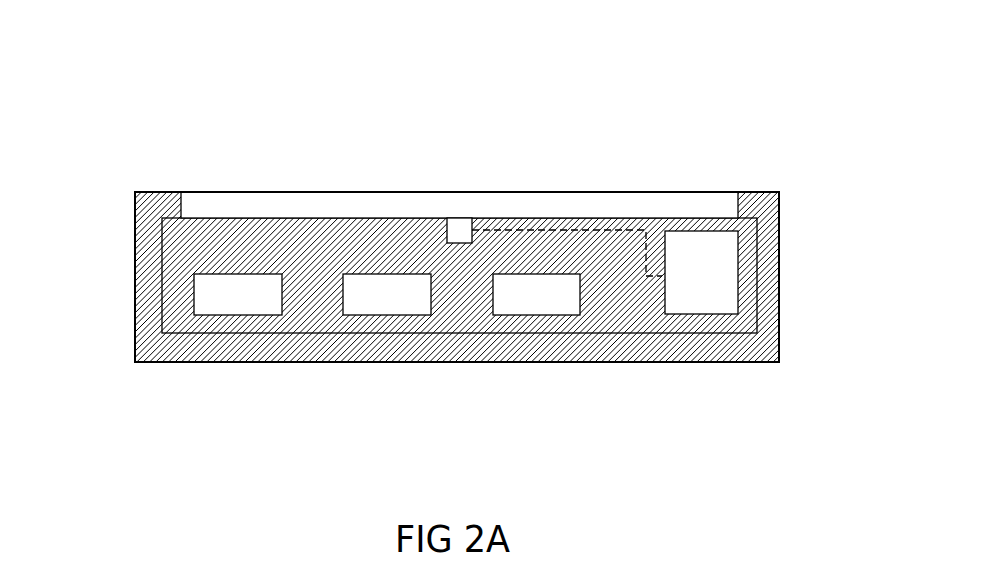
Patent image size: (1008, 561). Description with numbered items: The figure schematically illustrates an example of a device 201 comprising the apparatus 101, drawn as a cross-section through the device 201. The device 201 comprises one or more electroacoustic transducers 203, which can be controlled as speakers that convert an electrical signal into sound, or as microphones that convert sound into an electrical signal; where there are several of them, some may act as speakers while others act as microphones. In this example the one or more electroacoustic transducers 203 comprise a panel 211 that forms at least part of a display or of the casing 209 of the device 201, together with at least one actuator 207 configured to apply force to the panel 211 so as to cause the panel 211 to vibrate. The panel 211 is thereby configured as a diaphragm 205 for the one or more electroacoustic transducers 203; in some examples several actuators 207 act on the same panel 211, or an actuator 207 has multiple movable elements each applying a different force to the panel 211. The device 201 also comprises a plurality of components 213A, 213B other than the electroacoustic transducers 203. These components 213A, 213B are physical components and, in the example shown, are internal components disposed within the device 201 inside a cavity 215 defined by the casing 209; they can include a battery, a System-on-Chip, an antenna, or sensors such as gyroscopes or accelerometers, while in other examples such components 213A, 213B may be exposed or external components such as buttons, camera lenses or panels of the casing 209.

The device 201 is at (93, 95).
The electroacoustic transducer 203 is at (542, 112).
The diaphragm 205 is at (460, 192).
The actuator 207 is at (447, 229).
The panel 211 is at (649, 190).
The apparatus 101 is at (738, 273).
The component 213A is at (537, 317).
The component 213B is at (387, 317).
The cavity 215 is at (177, 300).
The casing 209 is at (753, 362).